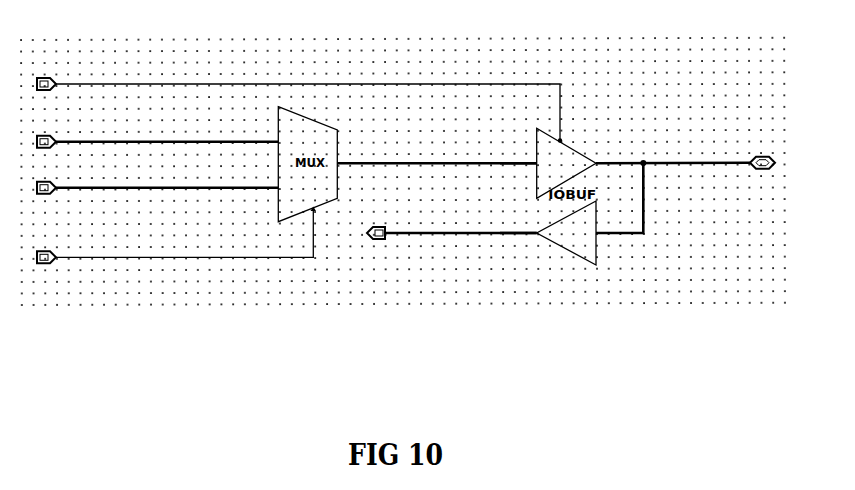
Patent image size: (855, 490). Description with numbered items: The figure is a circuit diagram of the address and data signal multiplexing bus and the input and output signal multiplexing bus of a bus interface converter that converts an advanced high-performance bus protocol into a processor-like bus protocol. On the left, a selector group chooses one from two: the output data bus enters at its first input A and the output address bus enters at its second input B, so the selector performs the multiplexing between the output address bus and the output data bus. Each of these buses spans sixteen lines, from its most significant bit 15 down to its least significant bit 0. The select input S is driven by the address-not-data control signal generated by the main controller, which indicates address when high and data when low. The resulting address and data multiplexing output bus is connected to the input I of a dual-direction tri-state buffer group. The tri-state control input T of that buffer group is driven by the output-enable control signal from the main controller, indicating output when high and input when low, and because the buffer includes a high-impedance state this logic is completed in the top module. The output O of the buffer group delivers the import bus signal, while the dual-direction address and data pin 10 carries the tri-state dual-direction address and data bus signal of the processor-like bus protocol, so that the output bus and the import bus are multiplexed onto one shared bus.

The ADS_OUT(15:0) bus from MUX to IOBUF input 15 is at (436, 150).
The ADS_IN(15:0) bus from IOBUF output 0 is at (452, 221).
The IO net / ADS(15:0) bidirectional port 10 is at (685, 183).
The MUX input A (AD_DATA_OUT bus) A is at (157, 130).
The MUX input B (AD_ADDR_OUT bus) B is at (157, 175).
The MUX select input (AD_ADDRNOTDATA) S is at (176, 235).
The IOBUF tristate control (ADS_OUT_EN) T is at (299, 98).
The IOBUF data input I is at (518, 153).
The IOBUF data output O is at (518, 223).